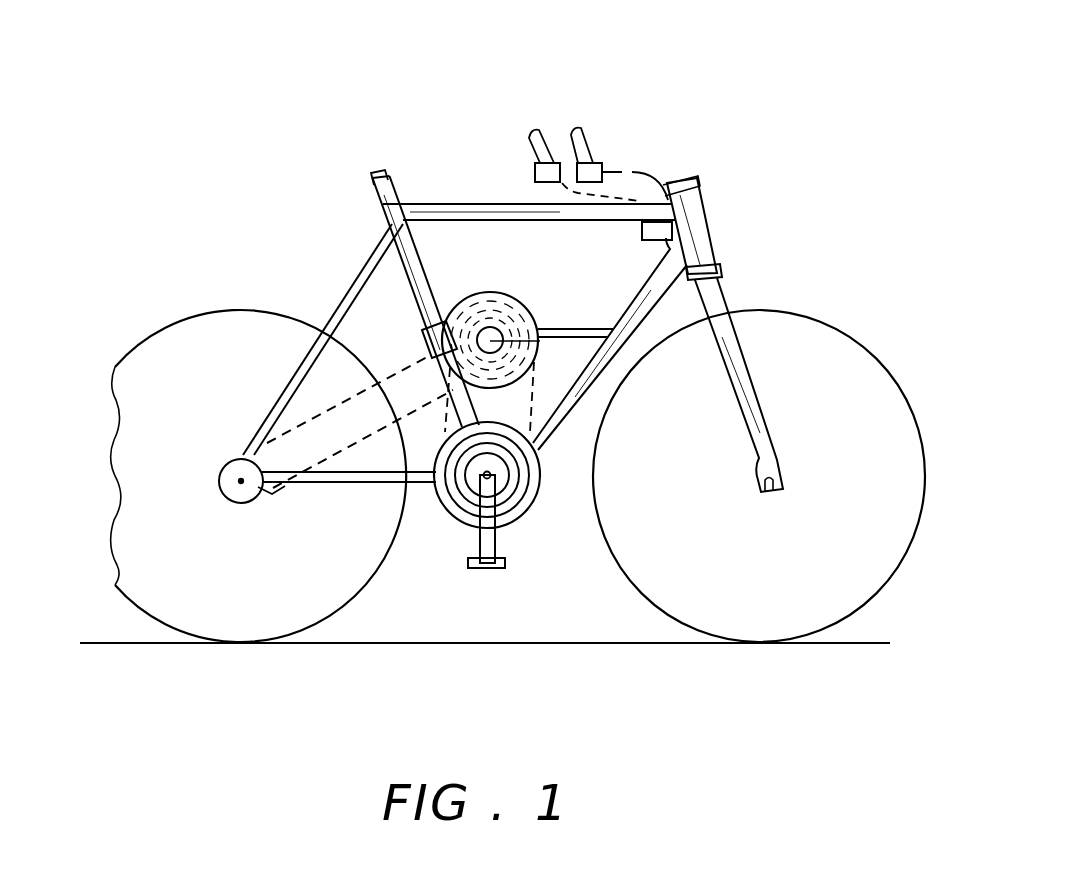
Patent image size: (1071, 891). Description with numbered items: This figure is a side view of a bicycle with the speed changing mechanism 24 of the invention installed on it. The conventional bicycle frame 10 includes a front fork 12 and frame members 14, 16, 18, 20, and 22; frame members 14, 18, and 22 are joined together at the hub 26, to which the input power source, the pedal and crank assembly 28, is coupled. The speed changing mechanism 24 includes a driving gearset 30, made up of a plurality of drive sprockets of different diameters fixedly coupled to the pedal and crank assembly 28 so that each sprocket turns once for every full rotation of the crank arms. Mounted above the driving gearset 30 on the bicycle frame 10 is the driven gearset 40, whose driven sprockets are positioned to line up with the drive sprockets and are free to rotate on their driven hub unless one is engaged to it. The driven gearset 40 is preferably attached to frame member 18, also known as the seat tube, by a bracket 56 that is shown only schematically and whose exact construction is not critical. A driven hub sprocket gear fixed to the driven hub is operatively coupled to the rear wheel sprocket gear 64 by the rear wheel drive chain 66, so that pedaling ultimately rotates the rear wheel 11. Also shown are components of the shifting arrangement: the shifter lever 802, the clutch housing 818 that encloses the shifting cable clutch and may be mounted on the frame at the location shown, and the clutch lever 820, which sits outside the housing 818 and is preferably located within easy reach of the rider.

The bicycle frame 10 is at (405, 95).
The rear wheel 11 is at (126, 522).
The front fork 12 is at (708, 303).
The frame member 14 is at (582, 378).
The frame member 16 is at (435, 202).
The seat tube 18 is at (417, 283).
The frame member 20 is at (333, 305).
The frame member 22 is at (358, 480).
The speed changing mechanism 24 is at (545, 300).
The hub 26 is at (493, 480).
The pedal and crank assembly 28 is at (480, 538).
The driving gearset 30 is at (532, 495).
The driven gearset 40 is at (488, 290).
The bracket 56 is at (424, 342).
The rear wheel sprocket gear 64 is at (218, 480).
The rear wheel drive chain 66 is at (293, 427).
The shifter lever 802 is at (583, 130).
The clutch housing 818 is at (677, 232).
The clutch lever 820 is at (535, 130).